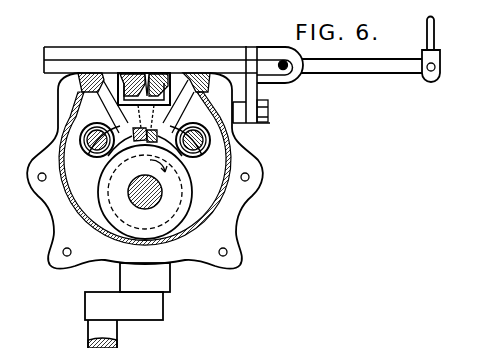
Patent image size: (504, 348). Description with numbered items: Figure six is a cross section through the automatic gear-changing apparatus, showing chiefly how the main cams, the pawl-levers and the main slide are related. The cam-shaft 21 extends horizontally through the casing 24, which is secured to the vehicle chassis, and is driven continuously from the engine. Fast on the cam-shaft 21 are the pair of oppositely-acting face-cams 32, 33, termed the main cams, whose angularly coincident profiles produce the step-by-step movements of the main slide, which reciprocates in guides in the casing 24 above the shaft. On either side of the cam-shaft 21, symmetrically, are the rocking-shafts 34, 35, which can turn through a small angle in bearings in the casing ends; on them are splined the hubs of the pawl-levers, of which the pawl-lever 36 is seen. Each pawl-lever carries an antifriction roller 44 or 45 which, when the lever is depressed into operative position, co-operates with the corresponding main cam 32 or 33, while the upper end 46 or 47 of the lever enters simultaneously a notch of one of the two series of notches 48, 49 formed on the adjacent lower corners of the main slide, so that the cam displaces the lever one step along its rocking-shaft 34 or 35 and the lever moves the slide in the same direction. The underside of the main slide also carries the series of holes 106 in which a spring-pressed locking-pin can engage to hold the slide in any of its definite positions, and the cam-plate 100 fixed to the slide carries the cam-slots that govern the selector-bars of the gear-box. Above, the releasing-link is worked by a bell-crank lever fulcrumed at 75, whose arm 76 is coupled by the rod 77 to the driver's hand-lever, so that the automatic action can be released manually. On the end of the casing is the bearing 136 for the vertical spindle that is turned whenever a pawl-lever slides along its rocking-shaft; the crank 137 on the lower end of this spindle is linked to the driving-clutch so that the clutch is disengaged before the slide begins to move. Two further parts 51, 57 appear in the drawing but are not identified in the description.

The cam-plate 100 is at (60, 65).
The upper end of pawl-lever 46 is at (113, 80).
The series of notches 48 is at (128, 87).
The holes 106 is at (147, 97).
The right wedge block 51 is at (160, 87).
The series of notches 49 is at (173, 80).
The pawl-lever 36 is at (107, 110).
The rocking-shaft 34 is at (83, 135).
The antifriction roller 44 is at (143, 134).
The cam-shaft 21 is at (150, 192).
The casing 24 is at (63, 262).
The crank 137 is at (98, 330).
The bearing 136 is at (160, 282).
The antifriction roller 45 is at (150, 137).
The main cam 32 is at (190, 206).
The main cam 33 is at (275, 222).
The rocking-shaft 35 is at (210, 146).
The nut 57 is at (268, 127).
The upper end of pawl-lever 47 is at (259, 85).
The fulcrum of bell-crank lever 75 is at (297, 77).
The arm of bell-crank lever 76 is at (397, 70).
The rod 77 is at (439, 33).